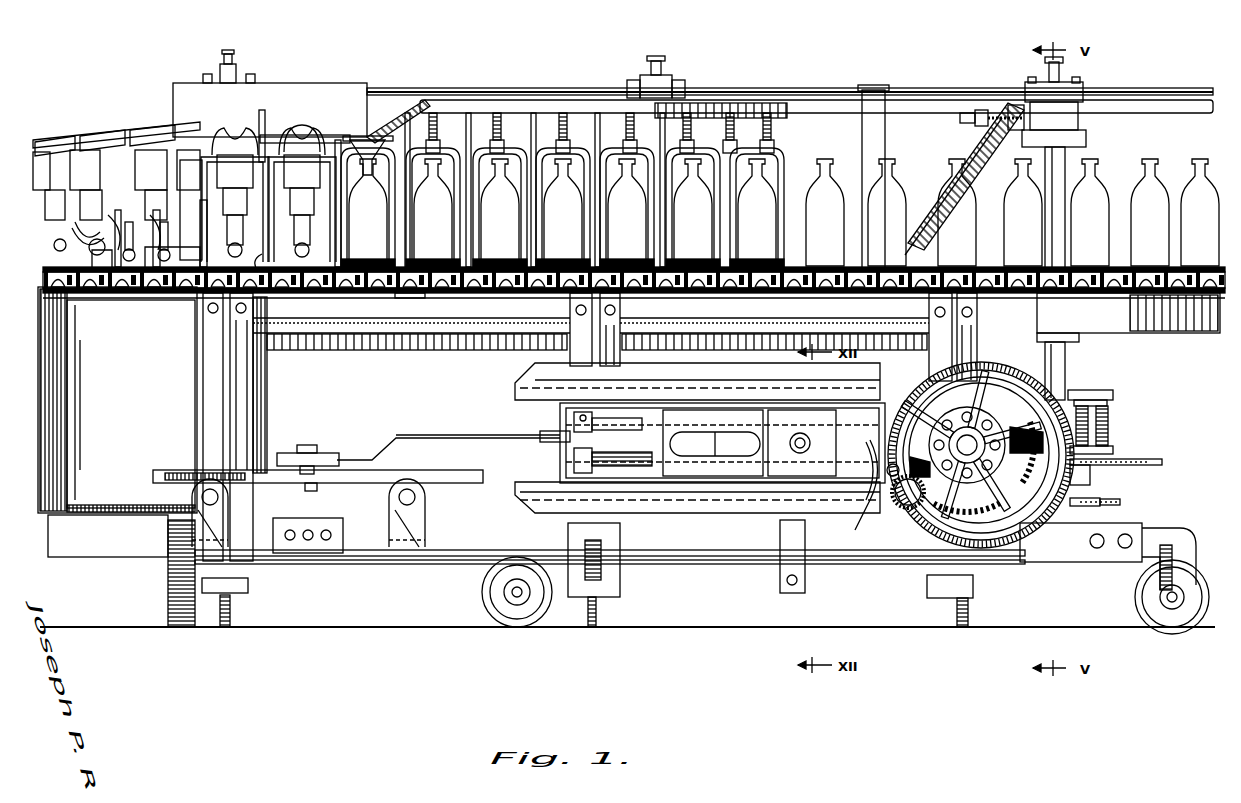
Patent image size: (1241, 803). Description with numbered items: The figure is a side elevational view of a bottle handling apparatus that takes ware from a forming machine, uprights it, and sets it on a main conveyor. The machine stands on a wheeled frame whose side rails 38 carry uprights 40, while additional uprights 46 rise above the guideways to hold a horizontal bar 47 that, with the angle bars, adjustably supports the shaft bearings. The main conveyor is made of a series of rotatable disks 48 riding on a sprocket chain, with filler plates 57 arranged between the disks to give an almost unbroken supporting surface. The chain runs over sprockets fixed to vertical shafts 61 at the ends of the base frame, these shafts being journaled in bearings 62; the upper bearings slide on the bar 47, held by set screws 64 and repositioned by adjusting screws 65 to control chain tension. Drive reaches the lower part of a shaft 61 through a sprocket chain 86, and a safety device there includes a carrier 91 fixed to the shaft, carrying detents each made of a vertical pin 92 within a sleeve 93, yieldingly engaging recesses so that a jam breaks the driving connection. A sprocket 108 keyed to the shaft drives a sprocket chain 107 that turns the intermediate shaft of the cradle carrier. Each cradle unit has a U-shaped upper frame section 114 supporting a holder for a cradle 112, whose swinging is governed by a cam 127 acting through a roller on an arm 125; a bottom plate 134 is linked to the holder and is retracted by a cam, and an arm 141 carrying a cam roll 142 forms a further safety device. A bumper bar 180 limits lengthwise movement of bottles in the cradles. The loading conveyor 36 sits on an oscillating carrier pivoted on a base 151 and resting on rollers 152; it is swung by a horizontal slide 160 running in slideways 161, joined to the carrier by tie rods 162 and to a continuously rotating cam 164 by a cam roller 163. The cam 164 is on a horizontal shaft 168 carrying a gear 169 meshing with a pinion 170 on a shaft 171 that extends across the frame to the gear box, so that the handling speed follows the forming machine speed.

The loading conveyor 36 is at (345, 590).
The side rails 38 is at (1070, 562).
The uprights 40 is at (208, 383).
The additional uprights 46 is at (474, 134).
The horizontal bar 47 is at (582, 80).
The rotatable disks 48 is at (503, 287).
The filler plates 57 is at (398, 286).
The vertical shafts 61 is at (1066, 359).
The bearings 62 is at (1086, 124).
The set screws 64 is at (234, 68).
The adjusting screws 65 is at (1022, 130).
The sprocket chain 86 is at (1160, 462).
The carrier 91 is at (1113, 448).
The vertical pin 92 is at (1108, 401).
The sleeve 93 is at (1112, 426).
The sprocket chain 107 is at (1122, 501).
The sprocket 108 is at (1096, 497).
The cradle 112 is at (240, 143).
The upper frame section 114 is at (310, 286).
The arm 125 is at (502, 127).
The cam 127 is at (530, 100).
The bottom plate 134 is at (42, 172).
The arm 141 is at (82, 234).
The cam roll 142 is at (88, 248).
The base 151 is at (356, 553).
The rollers 152 is at (193, 498).
The horizontal slide 160 is at (736, 480).
The slideways 161 is at (742, 378).
The tie rods 162 is at (498, 434).
The cam roller 163 is at (856, 494).
The cam 164 is at (905, 556).
The horizontal shaft 168 is at (982, 437).
The gear 169 is at (976, 483).
The pinion 170 is at (890, 498).
The shaft 171 is at (913, 502).
The bumper bar 180 is at (344, 94).